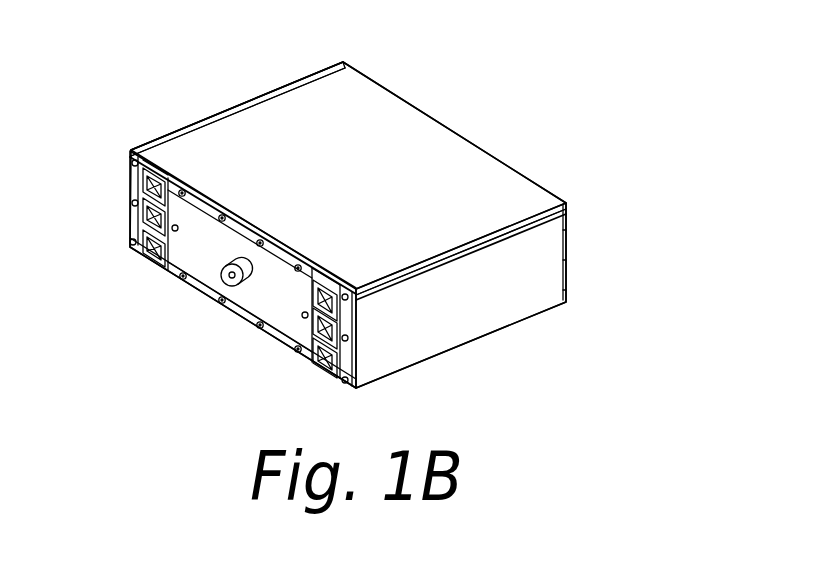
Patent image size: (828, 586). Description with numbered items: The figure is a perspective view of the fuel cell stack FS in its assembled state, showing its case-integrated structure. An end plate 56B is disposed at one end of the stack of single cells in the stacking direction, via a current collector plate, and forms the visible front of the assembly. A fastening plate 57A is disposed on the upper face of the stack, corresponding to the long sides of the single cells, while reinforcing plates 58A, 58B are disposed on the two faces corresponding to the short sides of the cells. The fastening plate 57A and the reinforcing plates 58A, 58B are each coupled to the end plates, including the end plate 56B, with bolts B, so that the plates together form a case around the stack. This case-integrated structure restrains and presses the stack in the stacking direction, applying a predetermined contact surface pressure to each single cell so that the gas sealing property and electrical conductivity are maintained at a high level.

The fuel cell stack FS is at (394, 83).
The fastening plate 57A is at (450, 172).
The reinforcing plate 58A is at (278, 88).
The reinforcing plate 58B is at (470, 328).
The end plate 56B is at (260, 302).
The bolts B is at (181, 275).